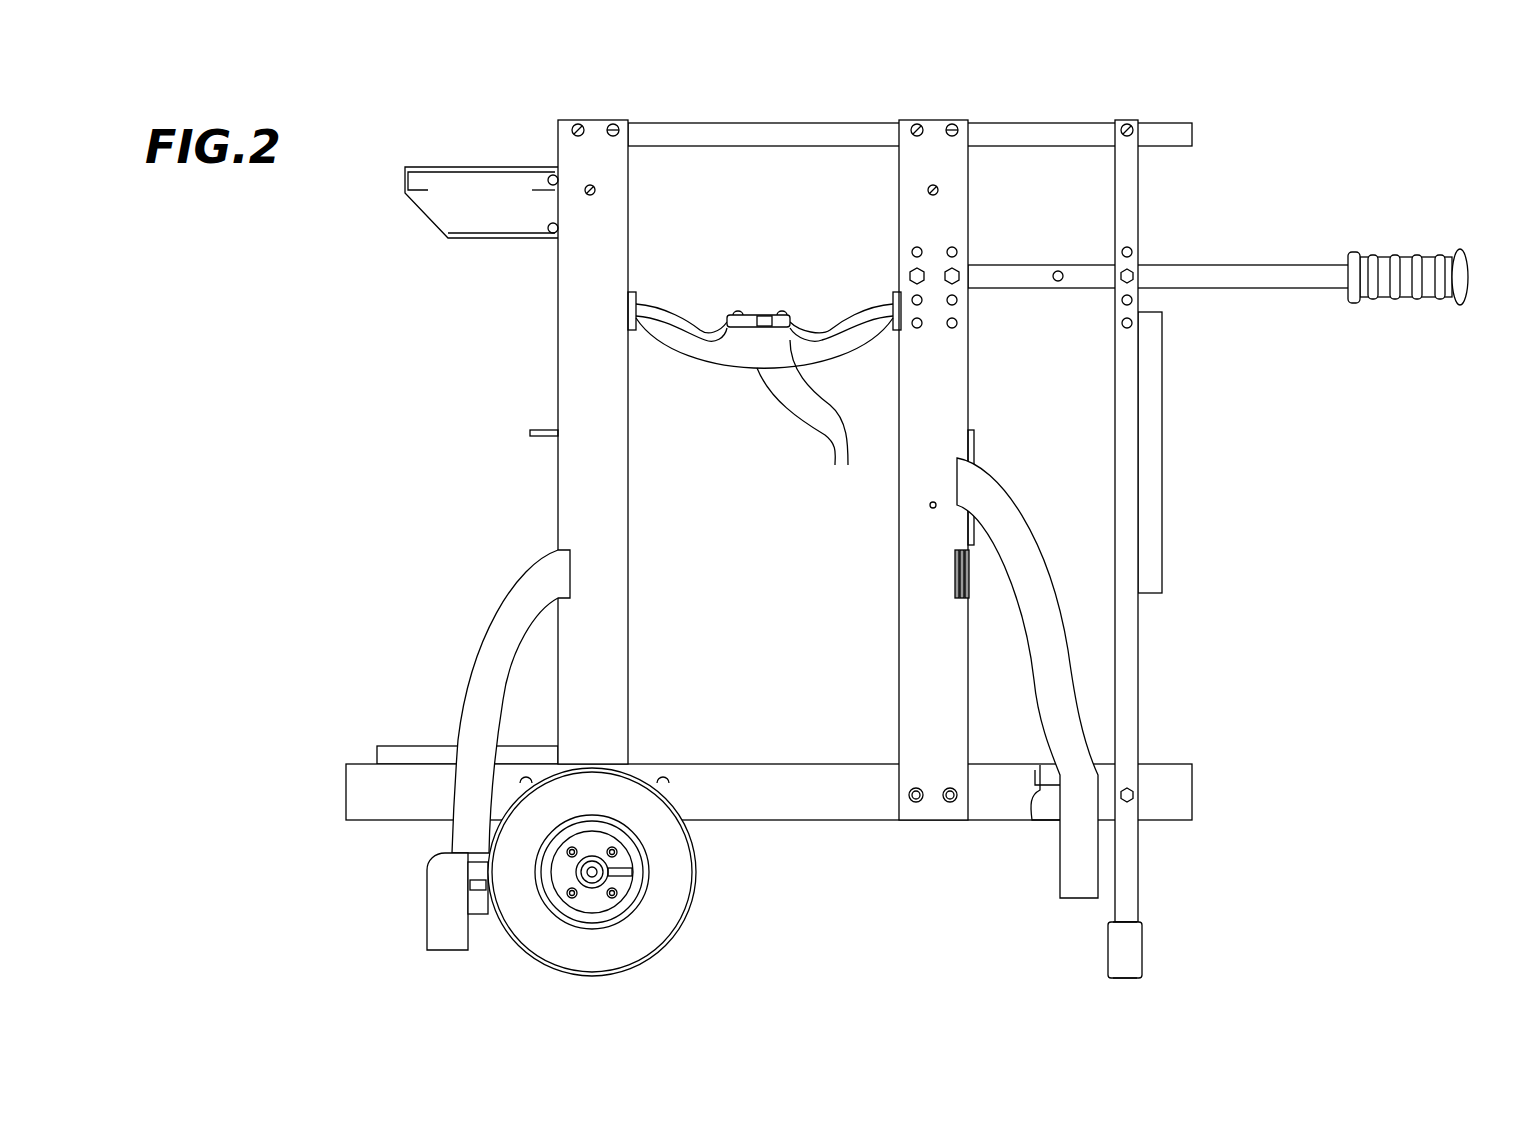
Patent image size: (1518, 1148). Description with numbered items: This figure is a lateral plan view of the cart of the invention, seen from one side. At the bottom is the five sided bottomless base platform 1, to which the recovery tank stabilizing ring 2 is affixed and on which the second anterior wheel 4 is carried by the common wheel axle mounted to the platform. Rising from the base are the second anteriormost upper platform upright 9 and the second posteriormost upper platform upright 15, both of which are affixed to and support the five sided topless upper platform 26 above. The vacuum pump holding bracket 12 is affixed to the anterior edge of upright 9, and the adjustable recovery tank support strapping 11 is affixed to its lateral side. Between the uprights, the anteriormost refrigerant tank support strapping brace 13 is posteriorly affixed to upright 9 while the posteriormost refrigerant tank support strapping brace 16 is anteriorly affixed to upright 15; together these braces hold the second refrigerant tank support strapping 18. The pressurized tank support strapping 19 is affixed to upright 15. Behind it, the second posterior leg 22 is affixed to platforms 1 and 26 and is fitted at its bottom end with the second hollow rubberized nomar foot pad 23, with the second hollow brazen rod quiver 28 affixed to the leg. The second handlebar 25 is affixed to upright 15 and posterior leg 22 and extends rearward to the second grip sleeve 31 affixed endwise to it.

The five sided bottomless base platform 1 is at (345, 792).
The recovery tank stabilizing ring 2 is at (430, 752).
The second anterior wheel 4 is at (680, 893).
The second anteriormost upper platform upright 9 is at (572, 310).
The adjustable recovery tank support strapping 11 is at (538, 592).
The vacuum pump holding bracket 12 is at (442, 178).
The anteriormost refrigerant tank support strapping brace 13 is at (638, 296).
The second posteriormost upper platform upright 15 is at (915, 560).
The posteriormost refrigerant tank support strapping brace 16 is at (888, 300).
The second refrigerant tank support strapping 18 is at (764, 410).
The pressurized tank support strapping 19 is at (1015, 540).
The second posterior leg 22 is at (1128, 665).
The second hollow rubberized nomar foot pad 23 is at (1135, 957).
The second handlebar 25 is at (1270, 272).
The five sided topless upper platform 26 is at (795, 138).
The second hollow brazen rod quiver 28 is at (1155, 540).
The second grip sleeve 31 is at (1440, 287).